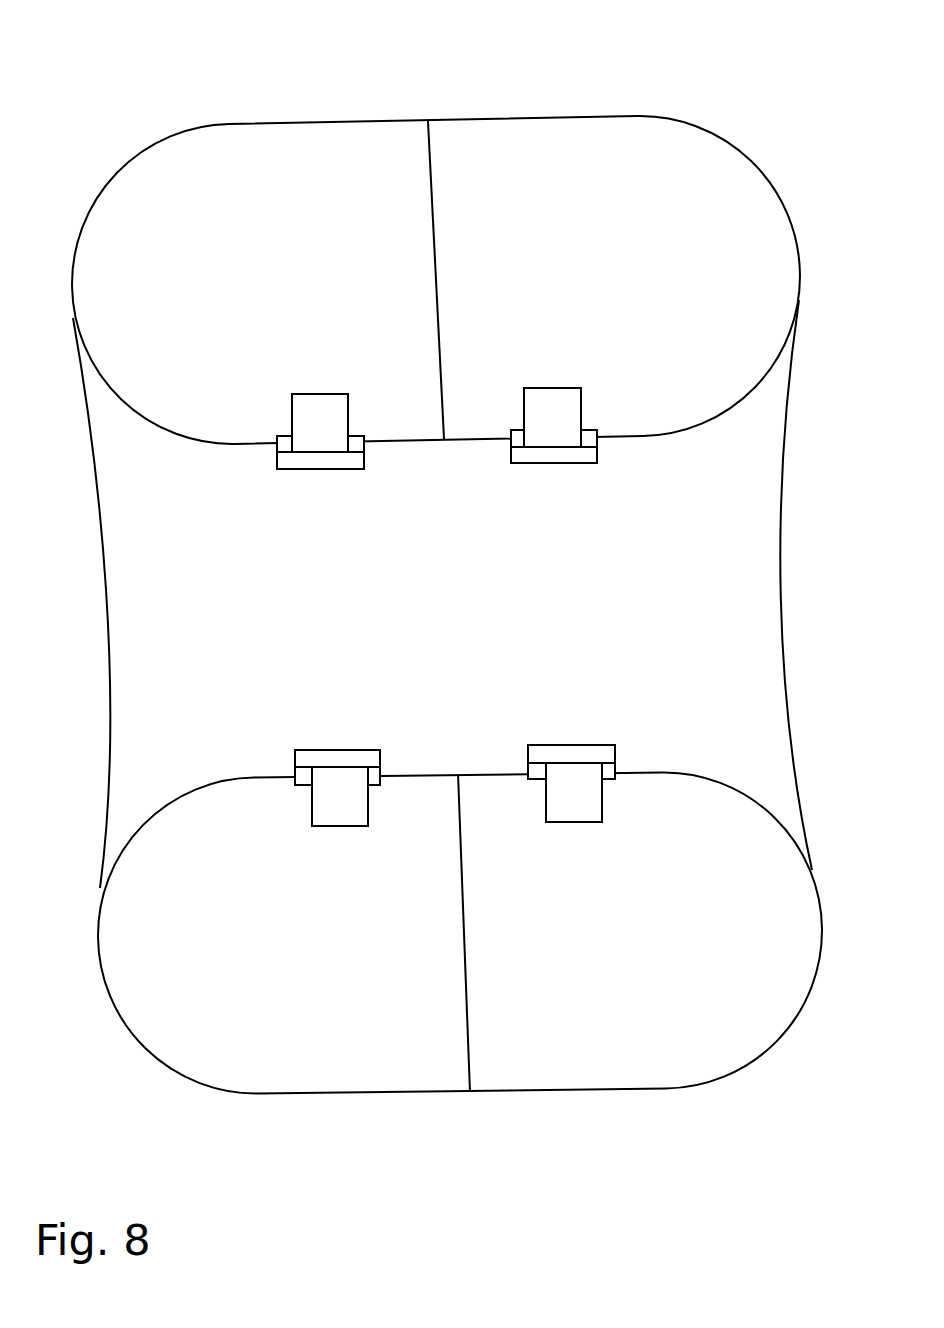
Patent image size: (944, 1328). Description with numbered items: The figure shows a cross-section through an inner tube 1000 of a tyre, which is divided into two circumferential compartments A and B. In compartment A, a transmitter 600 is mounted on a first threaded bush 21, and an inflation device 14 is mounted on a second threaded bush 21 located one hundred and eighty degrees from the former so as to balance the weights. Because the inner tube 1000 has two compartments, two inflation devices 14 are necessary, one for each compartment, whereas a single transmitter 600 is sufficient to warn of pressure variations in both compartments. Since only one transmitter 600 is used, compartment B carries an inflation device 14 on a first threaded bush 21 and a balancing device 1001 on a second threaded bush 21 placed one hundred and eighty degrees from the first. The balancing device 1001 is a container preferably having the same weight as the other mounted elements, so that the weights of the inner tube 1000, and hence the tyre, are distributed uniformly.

The inner tube 1000 is at (252, 122).
The transmitter 600 is at (325, 473).
The balancing device 1001 is at (558, 470).
The inflation device 14 is at (335, 747).
The threaded bush 21 is at (275, 447).
The compartment A is at (375, 152).
The compartment B is at (542, 148).